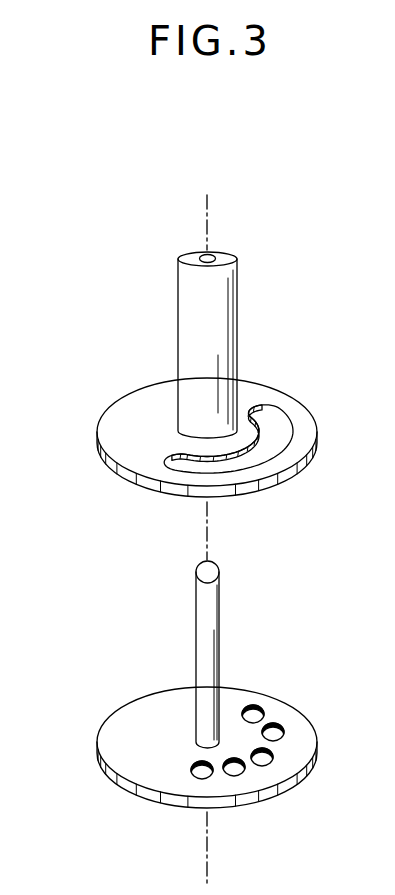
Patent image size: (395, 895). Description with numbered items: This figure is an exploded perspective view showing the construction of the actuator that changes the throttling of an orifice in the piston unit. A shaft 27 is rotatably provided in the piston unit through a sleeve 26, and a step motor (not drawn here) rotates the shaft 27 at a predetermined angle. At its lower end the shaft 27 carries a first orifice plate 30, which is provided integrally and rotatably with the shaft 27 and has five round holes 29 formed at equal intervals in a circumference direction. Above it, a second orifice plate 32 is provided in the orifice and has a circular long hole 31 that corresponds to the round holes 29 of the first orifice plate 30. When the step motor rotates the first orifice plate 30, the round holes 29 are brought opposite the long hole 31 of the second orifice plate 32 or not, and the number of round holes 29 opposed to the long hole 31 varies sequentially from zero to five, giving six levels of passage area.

The sleeve 26 is at (236, 315).
The shaft 27 is at (220, 617).
The round holes 29 is at (252, 706).
The first orifice plate 30 is at (143, 713).
The circular long hole 31 is at (280, 410).
The second orifice plate 32 is at (128, 401).